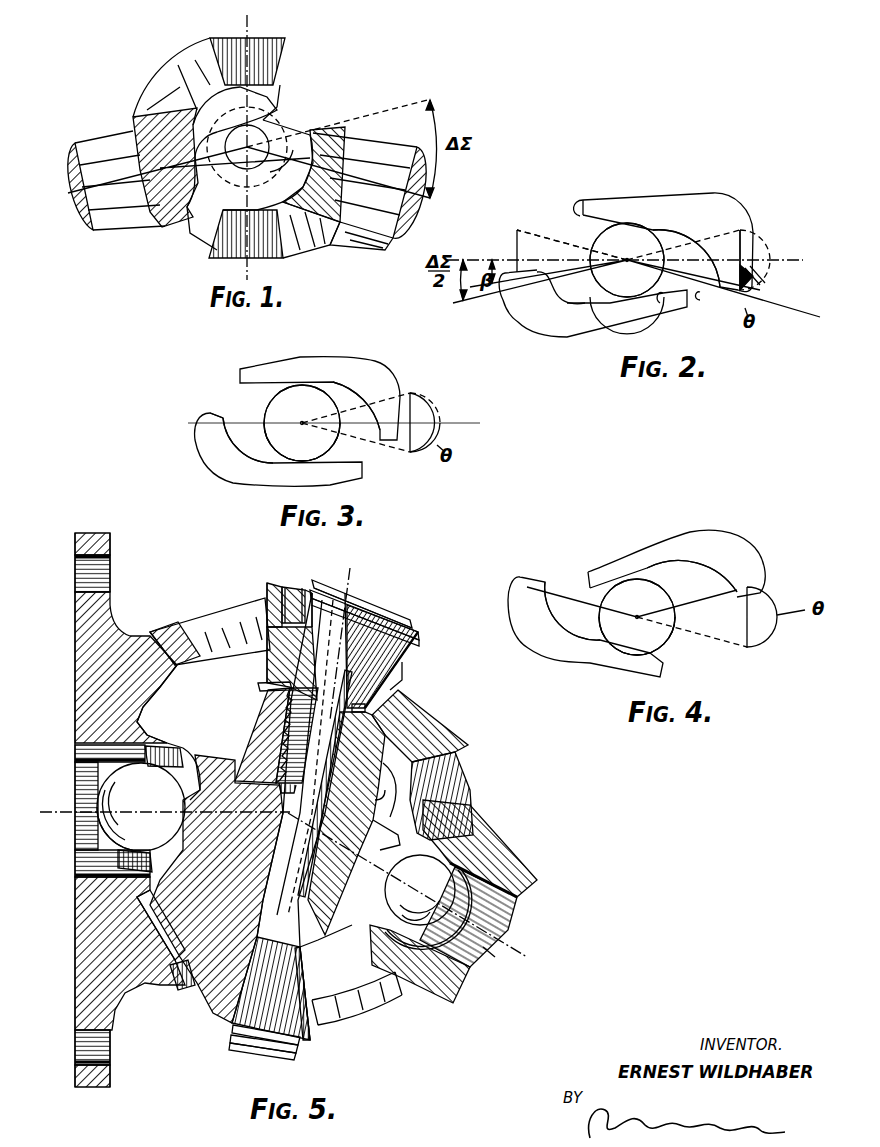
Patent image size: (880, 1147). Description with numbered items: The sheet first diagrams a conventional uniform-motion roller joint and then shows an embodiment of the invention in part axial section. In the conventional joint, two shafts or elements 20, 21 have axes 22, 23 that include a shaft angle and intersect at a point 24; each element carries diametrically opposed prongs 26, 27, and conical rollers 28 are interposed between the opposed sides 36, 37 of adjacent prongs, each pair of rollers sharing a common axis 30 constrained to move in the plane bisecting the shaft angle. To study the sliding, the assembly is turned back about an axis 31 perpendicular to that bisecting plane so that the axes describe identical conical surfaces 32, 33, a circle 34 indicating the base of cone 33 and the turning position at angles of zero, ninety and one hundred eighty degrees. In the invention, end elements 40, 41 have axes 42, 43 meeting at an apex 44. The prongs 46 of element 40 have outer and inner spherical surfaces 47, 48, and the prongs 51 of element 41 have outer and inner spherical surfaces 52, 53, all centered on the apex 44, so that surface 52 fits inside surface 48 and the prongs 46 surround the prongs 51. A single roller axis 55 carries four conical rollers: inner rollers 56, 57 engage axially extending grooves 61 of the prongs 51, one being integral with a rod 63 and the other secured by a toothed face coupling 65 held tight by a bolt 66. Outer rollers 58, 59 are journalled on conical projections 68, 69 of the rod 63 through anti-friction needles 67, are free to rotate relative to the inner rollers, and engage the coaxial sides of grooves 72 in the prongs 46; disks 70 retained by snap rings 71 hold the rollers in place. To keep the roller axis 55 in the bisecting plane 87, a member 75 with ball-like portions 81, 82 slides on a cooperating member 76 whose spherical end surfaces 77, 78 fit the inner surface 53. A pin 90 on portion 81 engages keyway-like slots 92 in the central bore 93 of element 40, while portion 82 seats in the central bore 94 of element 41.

In FIG. 1, the shaft or end element 20 is at (122, 140).
In FIG. 2, the shaft or end element 20 is at (550, 323).
In FIG. 3, the shaft or end element 20 is at (258, 475).
In FIG. 4, the shaft or end element 20 is at (565, 657).
In FIG. 1, the shaft or end element 21 is at (357, 223).
In FIG. 2, the shaft or end element 21 is at (718, 205).
In FIG. 3, the shaft or end element 21 is at (368, 368).
In FIG. 4, the shaft or end element 21 is at (728, 546).
In FIG. 1, the axis of element 20 22 is at (82, 192).
In FIG. 2, the axis of element 20 22 is at (560, 290).
In FIG. 3, the axis of element 20 22 is at (255, 424).
In FIG. 4, the axis of element 20 22 is at (567, 598).
In FIG. 1, the axis of element 21 23 is at (350, 177).
In FIG. 2, the axis of element 21 23 is at (702, 292).
In FIG. 3, the axis of element 21 23 is at (436, 424).
In FIG. 4, the axis of element 21 23 is at (696, 600).
In FIG. 1, the intersection point of the axes 24 is at (263, 133).
In FIG. 2, the intersection point of the axes 24 is at (624, 258).
In FIG. 3, the intersection point of the axes 24 is at (302, 421).
In FIG. 4, the intersection point of the axes 24 is at (637, 615).
In FIG. 1, the arm or prong of element 20 26 is at (200, 62).
In FIG. 1, the arm or prong of element 21 27 is at (290, 238).
In FIG. 1, the roller 28 is at (273, 62).
In FIG. 2, the roller 28 is at (635, 292).
In FIG. 3, the roller 28 is at (323, 445).
In FIG. 4, the roller 28 is at (657, 635).
In FIG. 1, the common roller axis 30 is at (252, 102).
In FIG. 2, the common roller axis 30 is at (626, 258).
In FIG. 3, the common roller axis 30 is at (302, 421).
In FIG. 4, the common roller axis 30 is at (637, 615).
In FIG. 2, the axis perpendicular to the bisecting plane 31 is at (783, 262).
In FIG. 3, the axis perpendicular to the bisecting plane 31 is at (246, 419).
In FIG. 2, the conical surface 32 is at (567, 243).
In FIG. 2, the conical surface 33 is at (722, 240).
In FIG. 3, the conical surface 33 is at (362, 410).
In FIG. 2, the circle indicating base of cone 33 34 is at (768, 280).
In FIG. 2, the side of prong 26 36 is at (658, 305).
In FIG. 2, the side of prong 27 37 is at (578, 214).
In FIG. 5, the end element 40 is at (112, 637).
In FIG. 5, the end element 41 is at (505, 870).
In FIG. 5, the axis of element 40 42 is at (53, 810).
In FIG. 5, the axis of element 41 43 is at (515, 937).
In FIG. 5, the apex point 44 is at (285, 822).
In FIG. 5, the arms or prongs of element 40 46 is at (218, 703).
In FIG. 5, the outer spherical surface of prongs 46 47 is at (203, 610).
In FIG. 5, the inner spherical surface of prongs 46 48 is at (188, 750).
In FIG. 5, the arms or prongs of element 41 51 is at (458, 803).
In FIG. 5, the outer spherical surface of prongs 51 52 is at (428, 710).
In FIG. 5, the inner spherical surface of prongs 51 53 is at (392, 806).
In FIG. 5, the roller axis 55 is at (353, 583).
In FIG. 5, the conical roller 56 is at (280, 665).
In FIG. 5, the conical roller 57 is at (205, 947).
In FIG. 5, the outer conical roller 58 is at (420, 637).
In FIG. 5, the outer conical roller 59 is at (310, 1037).
In FIG. 5, the axially extending groove 61 is at (400, 683).
In FIG. 5, the rod or bar 63 is at (270, 740).
In FIG. 5, the toothed face coupling 65 is at (366, 709).
In FIG. 5, the bolt 66 is at (310, 645).
In FIG. 5, the conical anti-friction rollers or needles 67 is at (267, 589).
In FIG. 5, the conical projection 68 is at (303, 587).
In FIG. 5, the conical projection 69 is at (183, 1013).
In FIG. 5, the disk 70 is at (400, 612).
In FIG. 5, the snap ring 71 is at (370, 607).
In FIG. 5, the groove in prongs 46 72 is at (243, 613).
In FIG. 5, the constraining member 75 is at (380, 800).
In FIG. 5, the cooperating member 76 is at (352, 757).
In FIG. 5, the spherical surface of member 76 77 is at (270, 686).
In FIG. 5, the spherical surface of member 76 78 is at (197, 920).
In FIG. 5, the spherical ball-like portion 81 is at (117, 817).
In FIG. 5, the spherical ball-like portion 82 is at (428, 915).
In FIG. 5, the bisecting plane 87 is at (372, 580).
In FIG. 5, the pin 90 is at (170, 753).
In FIG. 5, the plane-sided slot 92 is at (83, 750).
In FIG. 5, the central bore of member 40 93 is at (73, 815).
In FIG. 5, the central bore of element 41 94 is at (487, 950).